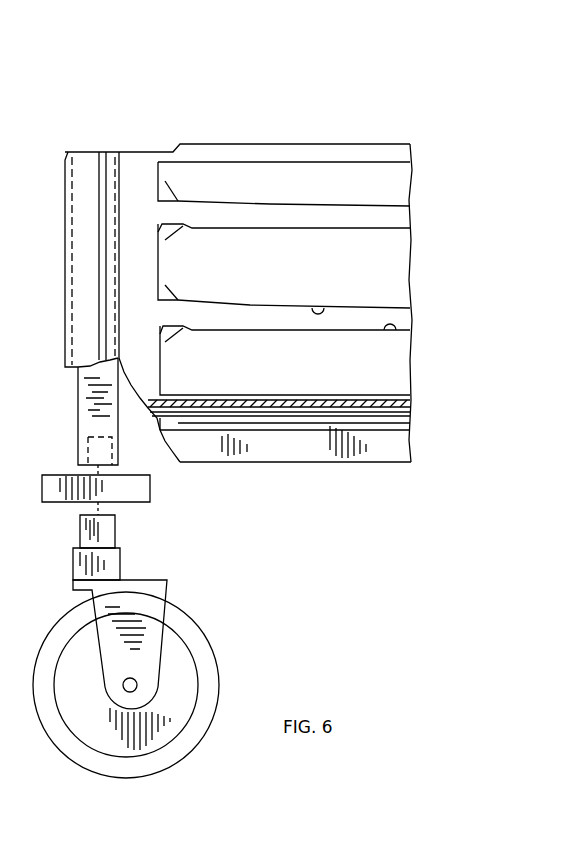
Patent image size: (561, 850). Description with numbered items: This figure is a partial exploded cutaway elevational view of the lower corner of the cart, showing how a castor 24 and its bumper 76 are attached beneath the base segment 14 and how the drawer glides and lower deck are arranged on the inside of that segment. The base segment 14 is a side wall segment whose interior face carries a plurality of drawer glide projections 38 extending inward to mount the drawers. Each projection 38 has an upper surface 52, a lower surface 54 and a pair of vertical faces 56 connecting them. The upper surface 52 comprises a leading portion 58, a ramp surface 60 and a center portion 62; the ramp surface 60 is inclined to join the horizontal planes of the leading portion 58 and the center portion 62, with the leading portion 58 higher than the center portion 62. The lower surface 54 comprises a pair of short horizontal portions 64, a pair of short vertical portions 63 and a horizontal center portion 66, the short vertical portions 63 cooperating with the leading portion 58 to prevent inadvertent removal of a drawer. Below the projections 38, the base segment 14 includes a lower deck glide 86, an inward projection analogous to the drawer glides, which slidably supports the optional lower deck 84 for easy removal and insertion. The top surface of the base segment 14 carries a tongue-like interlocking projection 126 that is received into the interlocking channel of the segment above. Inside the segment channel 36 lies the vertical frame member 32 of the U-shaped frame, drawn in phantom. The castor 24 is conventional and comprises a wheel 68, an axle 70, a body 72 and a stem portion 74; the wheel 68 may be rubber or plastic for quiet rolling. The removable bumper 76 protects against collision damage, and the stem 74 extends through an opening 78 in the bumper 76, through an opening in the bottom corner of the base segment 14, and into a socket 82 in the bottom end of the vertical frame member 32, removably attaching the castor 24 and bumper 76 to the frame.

The base segment 14 is at (65, 235).
The segment channel 36 is at (87, 190).
The interlocking projection 126 is at (247, 144).
The ramp surface 60 is at (255, 203).
The leading portion 58 is at (158, 181).
The drawer glide projection 38 is at (271, 191).
The center portion 62 is at (383, 203).
The vertical face 56 is at (158, 265).
The short horizontal portion 64 is at (166, 222).
The short vertical portion 63 is at (165, 242).
The horizontal center portion 66 is at (382, 230).
The upper surface 52 is at (318, 306).
The lower surface 54 is at (384, 331).
The lower deck glide 86 is at (388, 397).
The lower deck 84 is at (292, 407).
The vertical frame member 32 is at (88, 392).
The socket 82 is at (105, 450).
The opening in the bumper 78 is at (70, 462).
The bumper 76 is at (143, 487).
The stem portion 74 is at (106, 532).
The body 72 is at (145, 585).
The wheel 68 is at (170, 610).
The axle 70 is at (136, 681).
The castor 24 is at (162, 640).